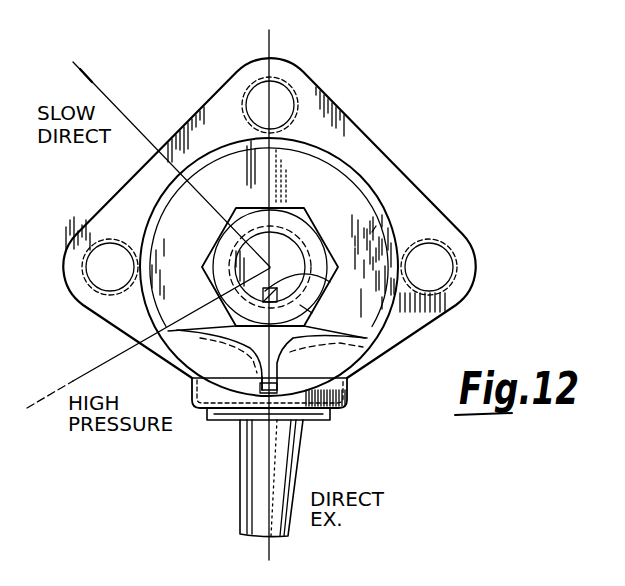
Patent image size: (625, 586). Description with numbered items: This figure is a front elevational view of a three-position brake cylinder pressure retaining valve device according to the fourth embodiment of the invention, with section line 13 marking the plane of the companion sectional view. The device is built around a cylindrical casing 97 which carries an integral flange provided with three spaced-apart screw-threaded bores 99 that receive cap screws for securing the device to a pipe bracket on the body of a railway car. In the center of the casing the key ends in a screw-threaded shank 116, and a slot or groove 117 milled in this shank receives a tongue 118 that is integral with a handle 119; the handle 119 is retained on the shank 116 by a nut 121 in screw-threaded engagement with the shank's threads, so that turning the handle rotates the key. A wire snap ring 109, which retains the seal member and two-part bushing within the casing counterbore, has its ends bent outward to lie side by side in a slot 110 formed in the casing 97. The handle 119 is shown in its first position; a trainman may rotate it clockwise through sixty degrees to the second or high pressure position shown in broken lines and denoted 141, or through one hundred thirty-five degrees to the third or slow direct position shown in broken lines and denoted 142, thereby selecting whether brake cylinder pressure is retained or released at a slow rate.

The section line 13- 13 is at (292, 560).
The cylindrical casing 97 is at (313, 373).
The screw-threaded bores 99 is at (117, 246).
The snap ring 109 is at (263, 378).
The slot 110 is at (267, 391).
The screw-threaded shank 116 is at (261, 237).
The slot or groove 117 is at (312, 313).
The tongue 118 is at (330, 282).
The handle 119 is at (372, 232).
The nut 121 is at (302, 230).
The high pressure position 141 is at (76, 381).
The slow direct position 142 is at (76, 63).